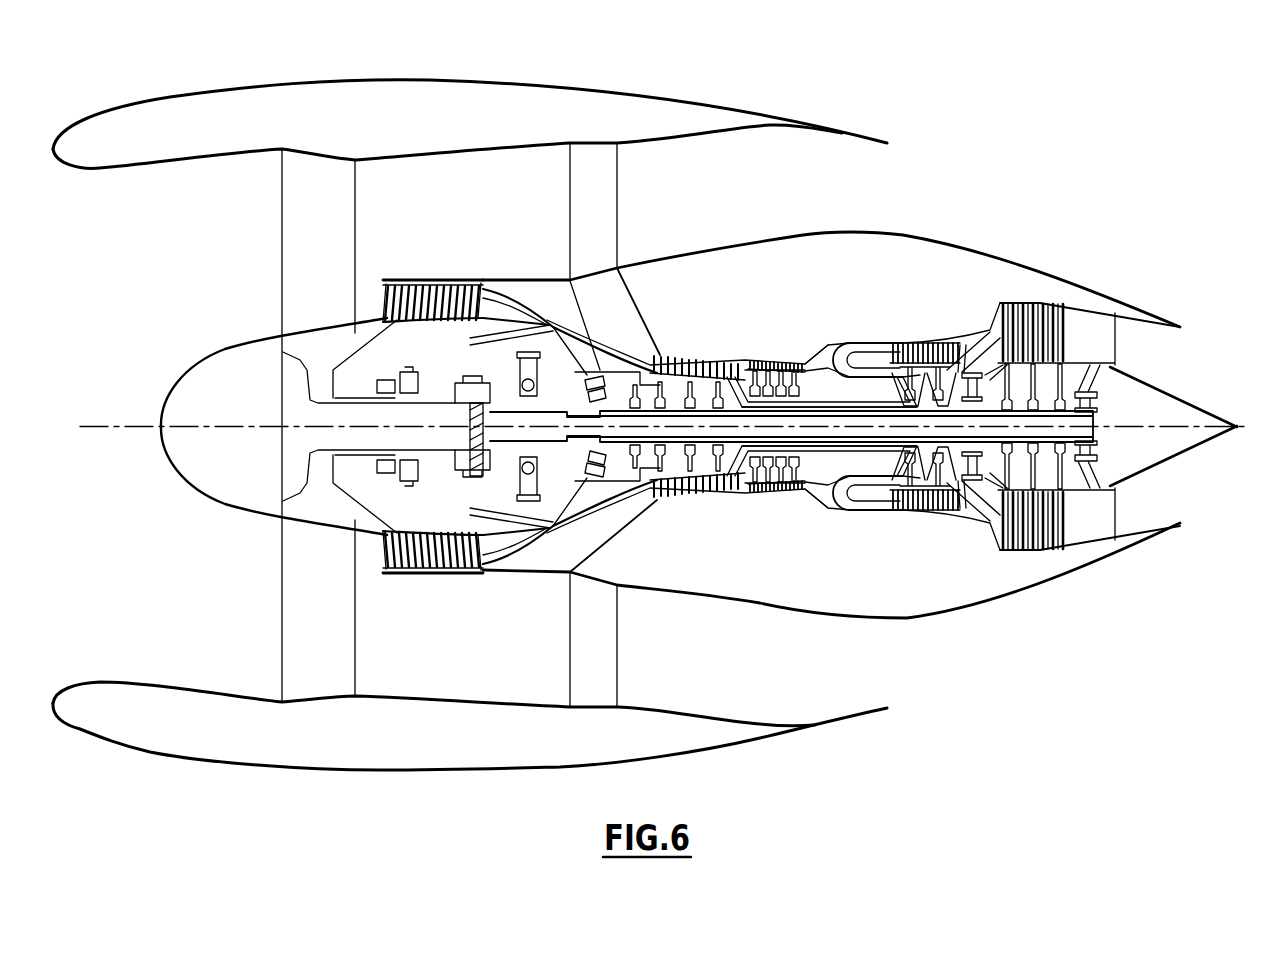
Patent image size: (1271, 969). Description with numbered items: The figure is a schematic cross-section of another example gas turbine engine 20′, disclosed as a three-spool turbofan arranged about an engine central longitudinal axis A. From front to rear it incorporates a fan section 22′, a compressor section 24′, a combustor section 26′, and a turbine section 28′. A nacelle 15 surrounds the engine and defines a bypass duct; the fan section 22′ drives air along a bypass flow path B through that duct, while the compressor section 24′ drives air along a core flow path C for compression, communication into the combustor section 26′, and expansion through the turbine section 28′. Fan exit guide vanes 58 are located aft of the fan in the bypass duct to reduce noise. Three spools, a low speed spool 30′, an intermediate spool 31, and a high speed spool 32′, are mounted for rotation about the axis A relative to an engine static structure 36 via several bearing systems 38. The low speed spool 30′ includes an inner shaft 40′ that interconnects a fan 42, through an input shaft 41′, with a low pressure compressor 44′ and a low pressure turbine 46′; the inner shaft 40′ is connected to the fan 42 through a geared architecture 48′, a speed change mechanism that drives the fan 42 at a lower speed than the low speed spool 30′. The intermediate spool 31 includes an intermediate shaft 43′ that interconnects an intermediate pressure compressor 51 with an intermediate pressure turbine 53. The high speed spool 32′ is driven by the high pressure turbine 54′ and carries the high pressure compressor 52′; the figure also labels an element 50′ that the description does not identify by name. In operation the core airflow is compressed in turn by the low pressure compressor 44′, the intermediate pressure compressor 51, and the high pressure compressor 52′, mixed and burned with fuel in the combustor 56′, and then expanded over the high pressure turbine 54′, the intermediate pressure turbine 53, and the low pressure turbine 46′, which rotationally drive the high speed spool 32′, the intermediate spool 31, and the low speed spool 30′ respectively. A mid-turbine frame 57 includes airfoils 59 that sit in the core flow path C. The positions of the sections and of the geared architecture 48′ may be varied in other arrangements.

The nacelle 15 is at (365, 93).
The gas turbine engine 20′ is at (728, 305).
The fan section 22′ is at (240, 188).
The compressor section 24′ is at (643, 272).
The combustor section 26′ is at (872, 305).
The turbine section 28′ is at (985, 274).
The low speed spool 30′ is at (813, 446).
The intermediate spool 31 is at (880, 450).
The high speed spool 32′ is at (813, 362).
The engine static structure 36 is at (655, 497).
The bearing systems 38 is at (600, 378).
The inner shaft 40′ is at (573, 405).
The input shaft 41′ is at (532, 474).
The fan 42 is at (331, 255).
The intermediate shaft 43′ is at (745, 446).
The low pressure compressor 44′ is at (458, 283).
The low pressure turbine 46′ is at (1037, 315).
The geared architecture 48′ is at (452, 400).
The outer shaft 50′ is at (817, 355).
The intermediate pressure compressor 51 is at (710, 357).
The high pressure compressor 52′ is at (758, 357).
The intermediate pressure turbine 53 is at (933, 345).
The high pressure turbine 54′ is at (910, 350).
The combustor 56′ is at (857, 343).
The mid-turbine frame 57 is at (955, 345).
The fan exit guide vanes 58 is at (600, 190).
The airfoils 59 is at (945, 345).
The engine central longitudinal axis A is at (96, 424).
The bypass flow path B is at (320, 199).
The core flow path C is at (395, 299).